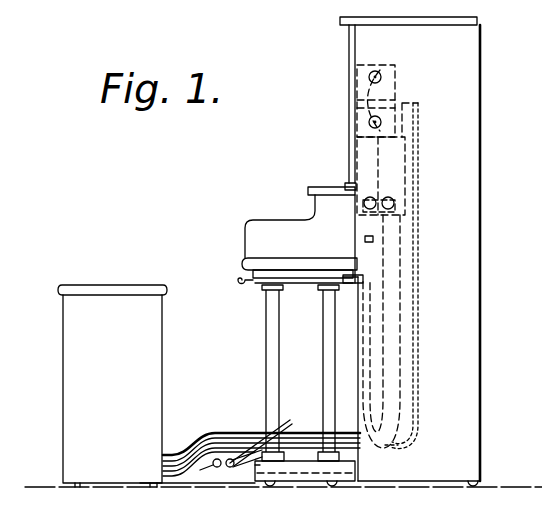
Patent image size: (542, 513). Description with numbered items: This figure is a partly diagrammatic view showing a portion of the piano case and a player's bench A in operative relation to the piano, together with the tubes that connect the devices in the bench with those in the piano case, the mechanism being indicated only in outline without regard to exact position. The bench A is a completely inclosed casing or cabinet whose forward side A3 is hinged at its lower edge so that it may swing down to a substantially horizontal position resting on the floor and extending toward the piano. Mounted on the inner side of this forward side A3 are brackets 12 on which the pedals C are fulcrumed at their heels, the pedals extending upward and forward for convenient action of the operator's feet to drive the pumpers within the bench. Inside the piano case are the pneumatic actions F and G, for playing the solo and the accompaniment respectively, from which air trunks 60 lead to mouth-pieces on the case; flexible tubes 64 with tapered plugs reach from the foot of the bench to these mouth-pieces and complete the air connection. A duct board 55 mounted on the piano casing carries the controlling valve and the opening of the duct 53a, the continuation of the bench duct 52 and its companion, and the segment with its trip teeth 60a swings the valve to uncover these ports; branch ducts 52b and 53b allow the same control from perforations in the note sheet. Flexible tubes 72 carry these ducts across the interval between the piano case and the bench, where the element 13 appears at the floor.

The player's bench A is at (75, 365).
The bracket 12 is at (222, 470).
The direction arrow / floor track 13 is at (464, 506).
The air duct 52 is at (370, 328).
The branch duct 52b is at (398, 445).
The duct 53a is at (370, 350).
The branch duct 53b is at (395, 452).
The duct board 55 is at (331, 250).
The air trunk 60 is at (400, 350).
The trip teeth 60a is at (294, 287).
The flexible tube 64 is at (228, 440).
The flexible tube 72 is at (345, 478).
The forward side A3 is at (249, 476).
The pedal C is at (291, 418).
The pneumatic action F is at (372, 183).
The pneumatic action G is at (412, 200).